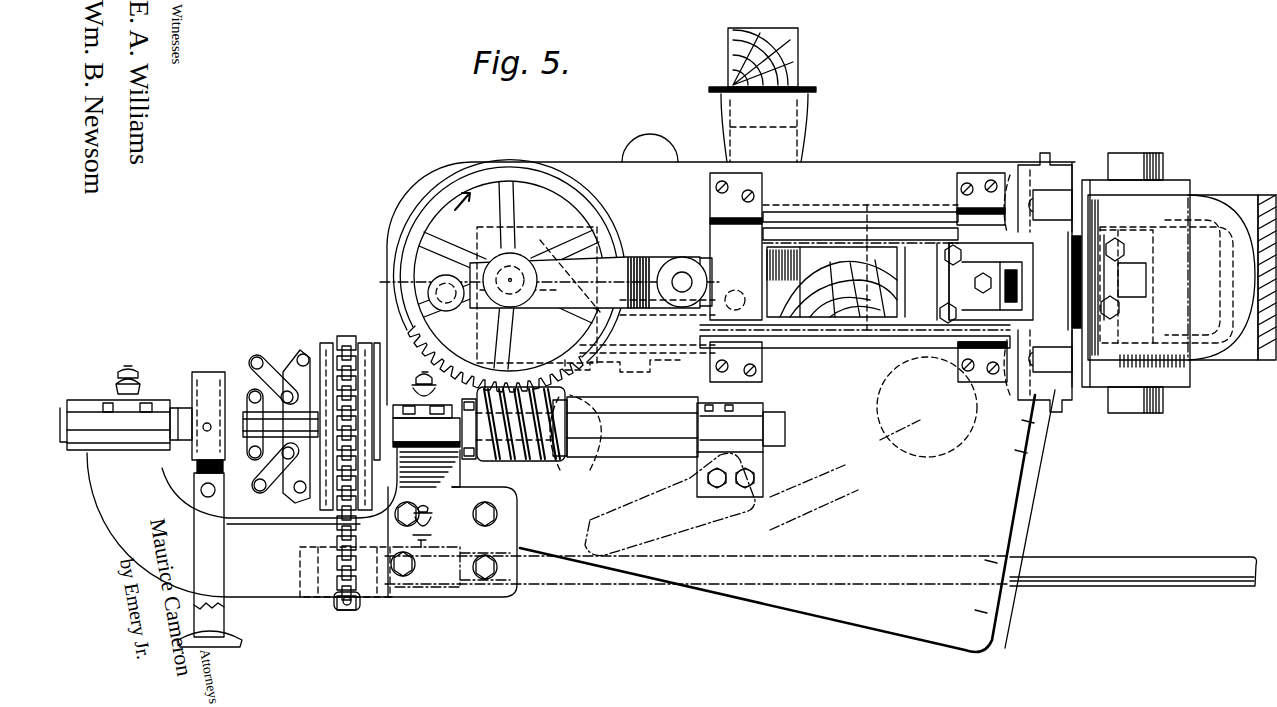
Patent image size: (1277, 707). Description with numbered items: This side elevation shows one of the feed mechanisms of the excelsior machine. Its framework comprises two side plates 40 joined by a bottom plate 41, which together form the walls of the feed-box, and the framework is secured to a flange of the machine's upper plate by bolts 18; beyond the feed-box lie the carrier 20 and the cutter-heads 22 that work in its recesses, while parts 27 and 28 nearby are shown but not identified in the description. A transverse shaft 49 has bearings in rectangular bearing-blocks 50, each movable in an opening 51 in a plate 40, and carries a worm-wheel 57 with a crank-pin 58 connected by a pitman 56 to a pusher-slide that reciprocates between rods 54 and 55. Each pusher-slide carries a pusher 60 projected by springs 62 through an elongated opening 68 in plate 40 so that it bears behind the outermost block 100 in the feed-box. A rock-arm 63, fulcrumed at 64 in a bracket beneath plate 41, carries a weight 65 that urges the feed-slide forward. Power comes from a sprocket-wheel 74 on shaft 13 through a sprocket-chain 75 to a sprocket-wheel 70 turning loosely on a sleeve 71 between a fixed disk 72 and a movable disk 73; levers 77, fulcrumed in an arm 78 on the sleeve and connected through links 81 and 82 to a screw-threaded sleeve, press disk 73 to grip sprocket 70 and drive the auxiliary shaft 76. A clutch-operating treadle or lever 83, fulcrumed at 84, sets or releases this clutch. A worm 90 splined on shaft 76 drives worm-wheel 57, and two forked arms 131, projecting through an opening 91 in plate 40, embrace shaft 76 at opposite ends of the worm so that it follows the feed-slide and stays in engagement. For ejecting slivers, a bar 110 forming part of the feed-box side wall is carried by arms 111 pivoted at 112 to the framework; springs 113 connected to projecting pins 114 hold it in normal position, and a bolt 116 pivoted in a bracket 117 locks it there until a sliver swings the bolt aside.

The shaft 13 is at (1073, 561).
The bolts 18 is at (1084, 178).
The carrier 20 is at (1240, 364).
The cutter-head 22 is at (1150, 352).
The upper block 27 is at (1158, 162).
The lower block 28 is at (1145, 414).
The side plates 40 is at (910, 170).
The bottom plate 41 is at (700, 347).
The transverse shaft 49 is at (514, 274).
The bearing-blocks 50 is at (549, 258).
The opening 51 is at (645, 257).
The rod 54 is at (890, 238).
The rod 55 is at (835, 350).
The pitman 56 is at (580, 270).
The worm-wheel 57 is at (499, 170).
The crank-pin 58 is at (446, 284).
The pusher 60 is at (805, 240).
The springs 62 is at (772, 240).
The rock-arm 63 is at (565, 496).
The fulcrum 64 is at (568, 362).
The weight 65 is at (918, 457).
The elongated opening 68 is at (897, 282).
The sprocket-wheel 70 is at (350, 340).
The sleeve 71 is at (305, 500).
The fixed disk 72 is at (372, 372).
The movable disk 73 is at (328, 345).
The sprocket-wheel 74 is at (362, 588).
The sprocket-chain 75 is at (343, 612).
The auxiliary shaft 76 is at (660, 445).
The levers 77 is at (297, 352).
The arm 78 is at (280, 360).
The link 81 is at (250, 362).
The link 82 is at (266, 468).
The clutch-operating treadle or lever 83 is at (207, 580).
The fulcrum 84 is at (205, 494).
The worm 90 is at (545, 462).
The opening 91 is at (700, 410).
The block 100 is at (835, 238).
The bar 110 is at (1050, 200).
The arms 111 is at (1005, 300).
The pivot 112 is at (1080, 188).
The springs 113 is at (985, 186).
The projecting pins 114 is at (1030, 185).
The bolt 116 is at (1110, 240).
The bracket 117 is at (935, 282).
The arms 131 is at (466, 460).